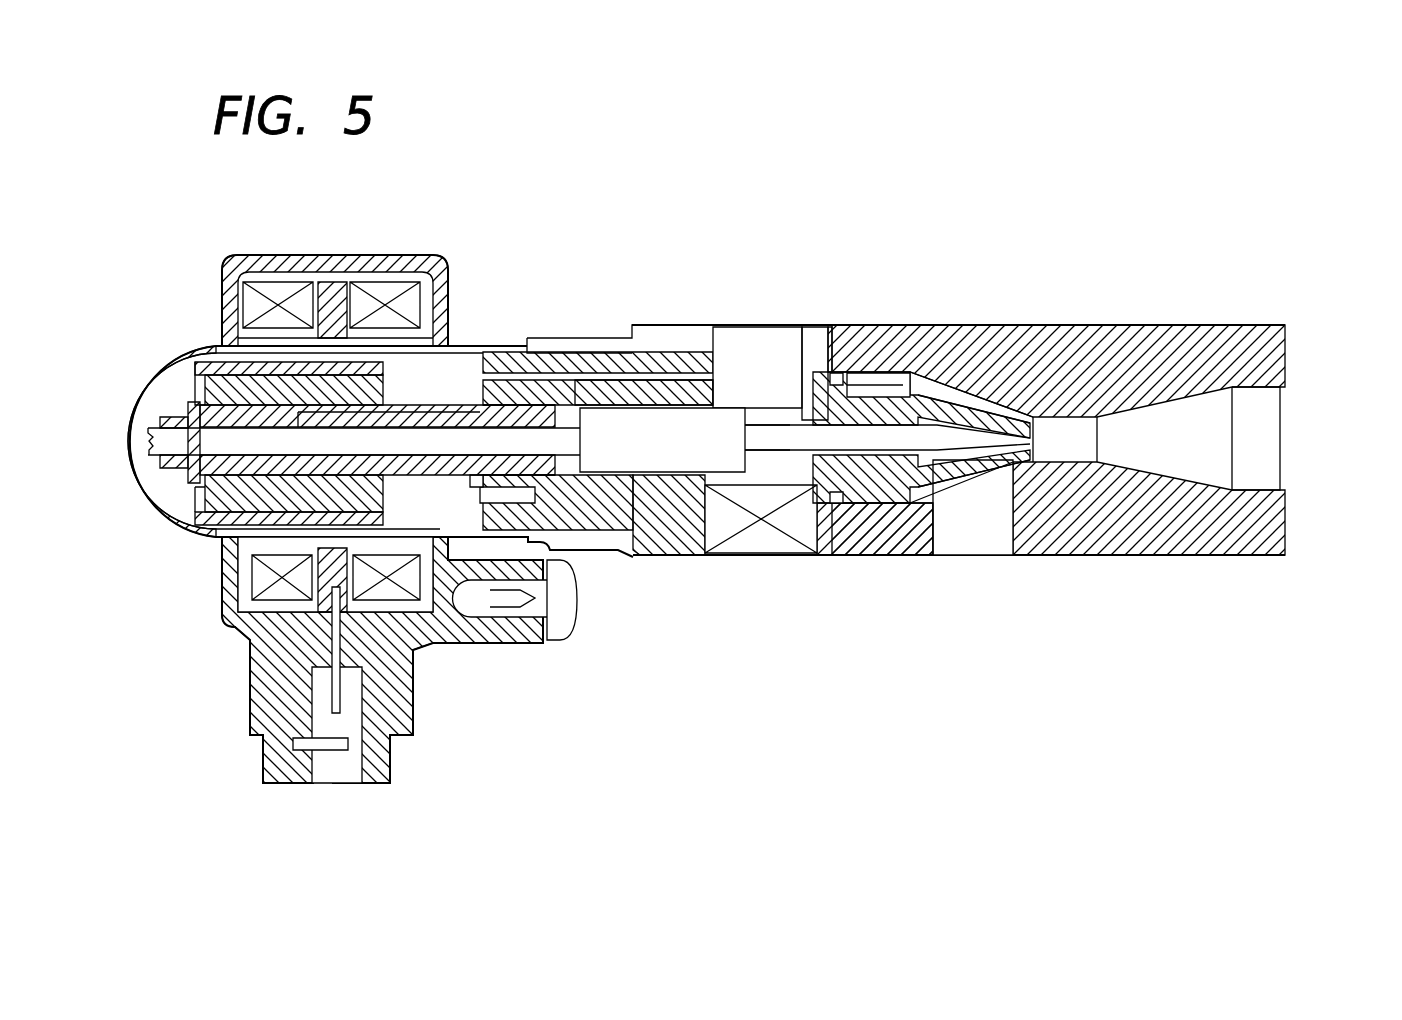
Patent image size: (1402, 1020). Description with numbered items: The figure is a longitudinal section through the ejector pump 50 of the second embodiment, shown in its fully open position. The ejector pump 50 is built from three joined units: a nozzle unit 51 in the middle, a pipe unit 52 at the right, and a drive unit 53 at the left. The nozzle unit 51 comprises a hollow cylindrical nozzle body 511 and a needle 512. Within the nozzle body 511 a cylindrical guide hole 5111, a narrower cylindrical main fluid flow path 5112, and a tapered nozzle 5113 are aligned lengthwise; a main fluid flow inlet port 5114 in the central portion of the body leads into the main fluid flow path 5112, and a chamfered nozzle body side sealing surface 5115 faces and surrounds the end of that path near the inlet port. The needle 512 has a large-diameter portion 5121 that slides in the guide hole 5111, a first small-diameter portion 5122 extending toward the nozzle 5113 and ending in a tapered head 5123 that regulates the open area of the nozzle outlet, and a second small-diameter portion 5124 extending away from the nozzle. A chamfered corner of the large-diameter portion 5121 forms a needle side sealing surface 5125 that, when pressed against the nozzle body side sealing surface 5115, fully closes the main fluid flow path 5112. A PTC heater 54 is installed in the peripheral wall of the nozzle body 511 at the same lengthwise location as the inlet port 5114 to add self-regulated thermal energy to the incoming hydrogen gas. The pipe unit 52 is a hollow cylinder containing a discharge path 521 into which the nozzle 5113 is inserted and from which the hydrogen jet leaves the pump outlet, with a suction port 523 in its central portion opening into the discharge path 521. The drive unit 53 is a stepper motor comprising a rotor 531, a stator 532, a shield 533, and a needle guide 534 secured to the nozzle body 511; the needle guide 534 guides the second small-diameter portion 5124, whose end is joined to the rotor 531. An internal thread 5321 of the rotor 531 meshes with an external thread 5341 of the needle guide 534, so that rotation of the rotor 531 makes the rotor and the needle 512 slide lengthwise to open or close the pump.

The ejector pump 50 is at (800, 178).
The nozzle unit 51 is at (640, 323).
The pipe unit 52 is at (1140, 557).
The drive unit 53 is at (317, 471).
The PTC heater 54 is at (797, 525).
The nozzle body 511 is at (690, 556).
The needle 512 is at (857, 437).
The discharge path 521 is at (1268, 422).
The suction port 523 is at (980, 540).
The rotor 531 is at (218, 497).
The stator 532 is at (270, 590).
The shield 533 is at (130, 500).
The needle guide 534 is at (478, 410).
The guide hole 5111 is at (578, 381).
The main fluid flow path 5112 is at (880, 520).
The nozzle 5113 is at (955, 415).
The main fluid flow inlet port 5114 is at (733, 330).
The nozzle body side sealing surface 5115 is at (813, 328).
The large-diameter portion 5121 is at (640, 455).
The first small-diameter portion 5122 is at (898, 440).
The tapered head 5123 is at (1010, 430).
The second small-diameter portion 5124 is at (495, 438).
The needle side sealing surface 5125 is at (773, 462).
The internal thread 5321 is at (217, 417).
The external thread 5341 is at (445, 395).